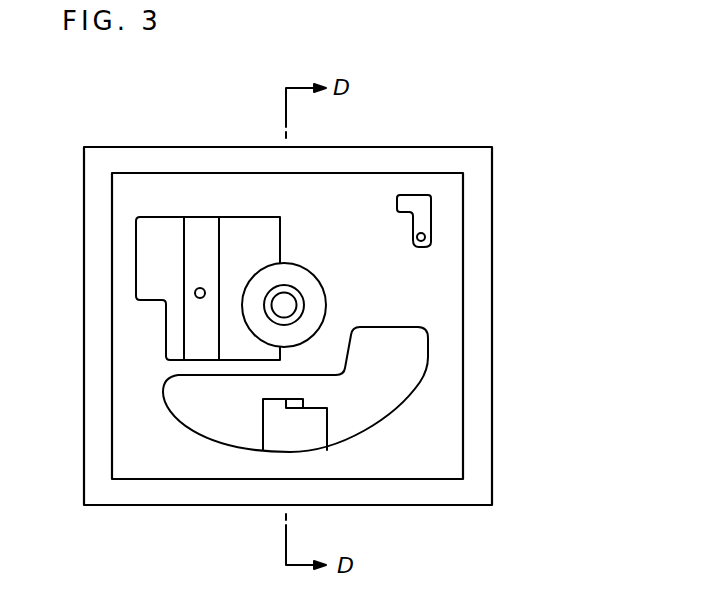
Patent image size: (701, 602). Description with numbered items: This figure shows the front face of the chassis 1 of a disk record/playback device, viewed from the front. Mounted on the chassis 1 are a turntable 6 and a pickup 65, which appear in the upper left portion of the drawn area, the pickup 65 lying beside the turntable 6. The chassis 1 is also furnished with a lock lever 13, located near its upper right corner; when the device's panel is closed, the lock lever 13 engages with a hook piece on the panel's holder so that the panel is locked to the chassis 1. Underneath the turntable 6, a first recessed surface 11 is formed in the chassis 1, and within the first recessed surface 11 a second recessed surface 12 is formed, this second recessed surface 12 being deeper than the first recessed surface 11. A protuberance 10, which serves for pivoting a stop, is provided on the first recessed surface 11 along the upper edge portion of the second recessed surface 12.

The chassis 1 is at (447, 283).
The turntable 6 is at (290, 275).
The protuberance 10 is at (304, 400).
The first recessed surface 11 is at (418, 352).
The second recessed surface 12 is at (328, 440).
The lock lever 13 is at (425, 207).
The pickup 65 is at (198, 228).